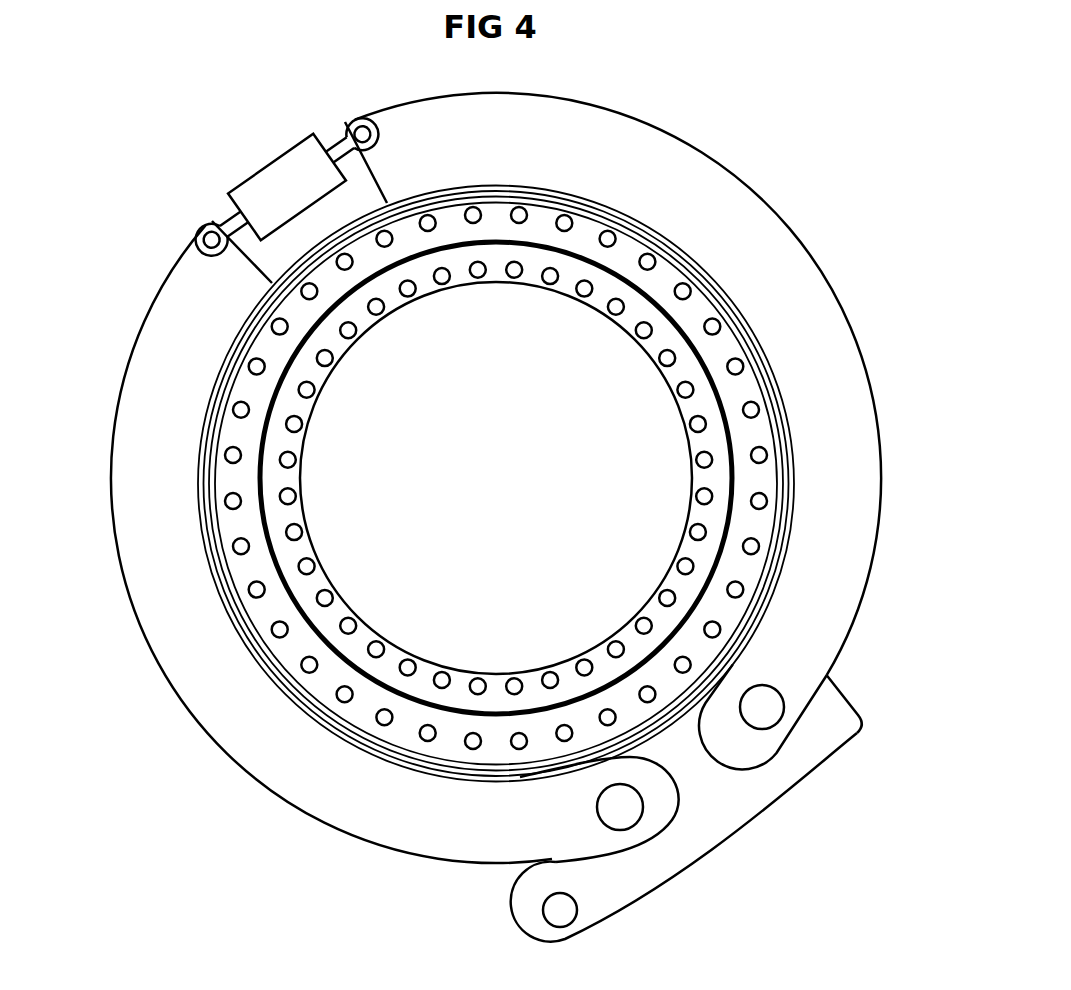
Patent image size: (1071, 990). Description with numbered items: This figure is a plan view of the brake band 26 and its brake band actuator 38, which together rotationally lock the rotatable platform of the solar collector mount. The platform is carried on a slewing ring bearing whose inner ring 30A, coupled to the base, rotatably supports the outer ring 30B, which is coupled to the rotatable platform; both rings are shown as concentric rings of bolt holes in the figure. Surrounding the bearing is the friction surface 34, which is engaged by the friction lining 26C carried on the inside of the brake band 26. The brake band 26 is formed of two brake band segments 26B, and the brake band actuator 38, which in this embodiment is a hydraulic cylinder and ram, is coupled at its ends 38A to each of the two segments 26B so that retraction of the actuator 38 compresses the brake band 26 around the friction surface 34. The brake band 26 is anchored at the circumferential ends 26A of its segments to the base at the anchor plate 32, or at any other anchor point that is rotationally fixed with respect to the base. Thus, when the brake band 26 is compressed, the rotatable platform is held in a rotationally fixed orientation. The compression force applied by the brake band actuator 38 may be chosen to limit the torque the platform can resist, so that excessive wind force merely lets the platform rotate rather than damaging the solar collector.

The brake band 26 is at (835, 388).
The circumferential ends 26A is at (620, 808).
The brake band segments 26B is at (712, 195).
The friction lining 26C is at (270, 683).
The inner ring 30A is at (700, 560).
The outer ring 30B is at (772, 462).
The anchor plate 32 is at (672, 860).
The friction surface 34 is at (737, 297).
The brake band actuator 38 is at (277, 183).
The ends 38A is at (357, 128).